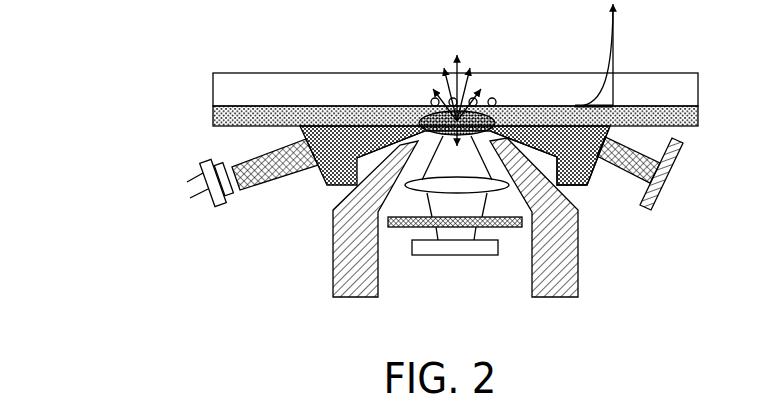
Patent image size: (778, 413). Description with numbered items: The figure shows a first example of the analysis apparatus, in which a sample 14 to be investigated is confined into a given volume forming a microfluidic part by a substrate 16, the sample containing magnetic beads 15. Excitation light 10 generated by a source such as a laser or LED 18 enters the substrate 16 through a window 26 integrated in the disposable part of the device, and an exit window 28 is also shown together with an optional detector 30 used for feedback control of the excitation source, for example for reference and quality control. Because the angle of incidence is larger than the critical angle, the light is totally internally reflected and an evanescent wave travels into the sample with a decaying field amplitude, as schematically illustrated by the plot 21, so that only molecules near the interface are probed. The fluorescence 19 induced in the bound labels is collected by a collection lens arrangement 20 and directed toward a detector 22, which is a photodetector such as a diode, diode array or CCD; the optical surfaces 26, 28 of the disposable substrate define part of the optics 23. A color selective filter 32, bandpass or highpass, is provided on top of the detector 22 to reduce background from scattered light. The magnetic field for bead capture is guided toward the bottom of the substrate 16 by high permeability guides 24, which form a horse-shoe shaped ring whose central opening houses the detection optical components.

The excitation light 10 is at (263, 184).
The sample 14 is at (699, 92).
The magnetic beads 15 is at (428, 104).
The substrate 16 is at (699, 118).
The laser (or LED) 18 is at (205, 163).
The fluorescence 19 is at (452, 73).
The collection lens arrangement 20 is at (516, 141).
The plot 21 is at (606, 67).
The detector 22 is at (433, 257).
The optics 23 is at (500, 197).
The guides 24 is at (580, 284).
The window 26 is at (326, 185).
The exit window 28 is at (587, 181).
The detector 30 is at (676, 179).
The color selective filter 32 is at (516, 230).